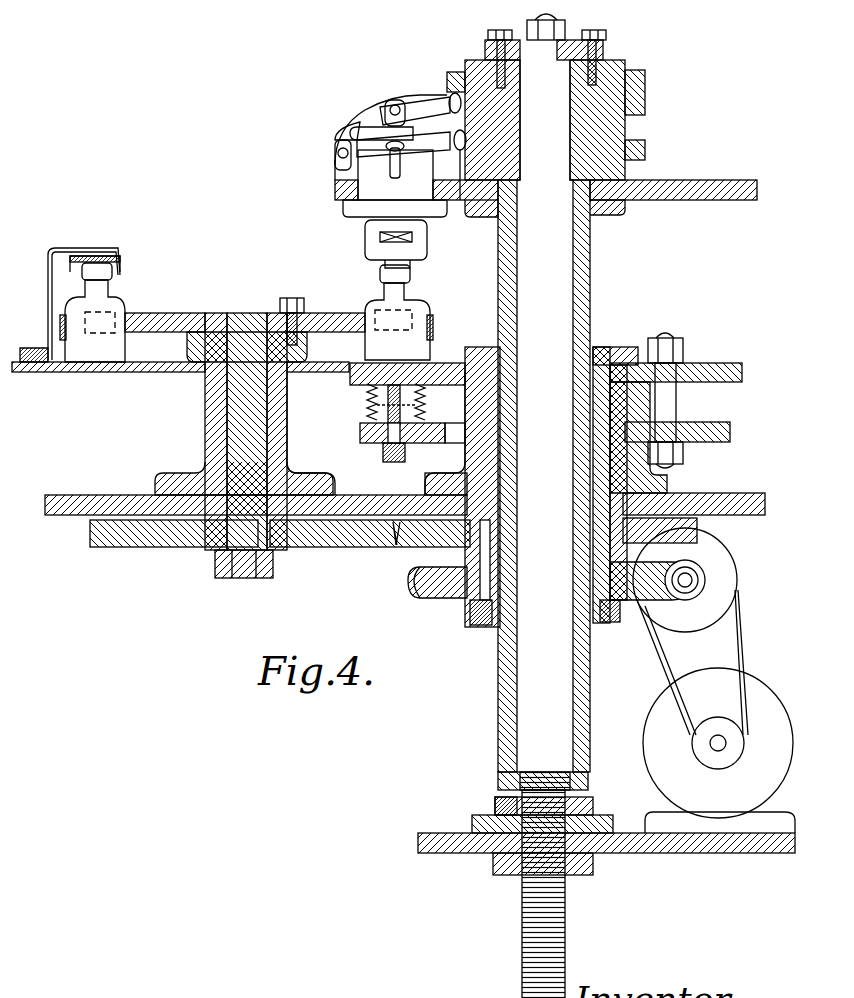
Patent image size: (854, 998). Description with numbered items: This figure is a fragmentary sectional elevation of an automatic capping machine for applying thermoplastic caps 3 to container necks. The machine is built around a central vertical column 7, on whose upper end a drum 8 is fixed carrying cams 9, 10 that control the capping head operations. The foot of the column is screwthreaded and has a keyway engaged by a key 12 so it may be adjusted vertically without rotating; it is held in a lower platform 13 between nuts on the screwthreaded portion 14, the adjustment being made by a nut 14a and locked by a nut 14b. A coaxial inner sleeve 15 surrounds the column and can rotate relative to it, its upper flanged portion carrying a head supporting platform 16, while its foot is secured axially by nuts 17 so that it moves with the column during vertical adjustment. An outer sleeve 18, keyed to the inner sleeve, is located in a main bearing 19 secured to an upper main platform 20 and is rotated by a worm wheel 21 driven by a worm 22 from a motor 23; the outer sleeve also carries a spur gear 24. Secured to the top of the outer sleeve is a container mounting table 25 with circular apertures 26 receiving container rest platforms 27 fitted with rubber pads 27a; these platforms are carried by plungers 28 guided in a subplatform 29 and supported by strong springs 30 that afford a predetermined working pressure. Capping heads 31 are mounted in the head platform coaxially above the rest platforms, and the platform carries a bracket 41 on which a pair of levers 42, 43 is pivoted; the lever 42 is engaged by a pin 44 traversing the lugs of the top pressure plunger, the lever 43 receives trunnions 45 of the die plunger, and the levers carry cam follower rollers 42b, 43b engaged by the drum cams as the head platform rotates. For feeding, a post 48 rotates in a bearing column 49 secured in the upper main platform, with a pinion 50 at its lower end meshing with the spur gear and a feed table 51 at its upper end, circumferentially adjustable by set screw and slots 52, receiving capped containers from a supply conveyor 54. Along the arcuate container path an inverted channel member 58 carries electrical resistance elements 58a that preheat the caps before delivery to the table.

The cap 3 is at (382, 272).
The central vertical column 7 is at (544, 416).
The drum 8 is at (485, 62).
The cam 9 is at (646, 88).
The cam 10 is at (646, 150).
The key 12 is at (595, 812).
The lower platform 13 is at (726, 853).
The screwthreaded portion 14 is at (566, 913).
The nut 14a is at (494, 802).
The nut 14b is at (592, 870).
The inner sleeve 15 is at (590, 237).
The head supporting platform 16 is at (727, 200).
The nuts 17 is at (588, 778).
The outer sleeve 18 is at (602, 350).
The main bearing 19 is at (627, 410).
The upper main platform 20 is at (362, 490).
The worm wheel 21 is at (410, 585).
The worm 22 is at (695, 578).
The motor 23 is at (715, 732).
The spur gear 24 is at (398, 545).
The container mounting table 25 is at (700, 363).
The circular apertures 26 is at (428, 378).
The container rest platforms 27 is at (366, 390).
The rubber pads 27a is at (372, 370).
The plungers 28 is at (386, 430).
The subplatform 29 is at (413, 458).
The springs 30 is at (427, 403).
The capping heads 31 is at (364, 238).
The bracket 41 is at (334, 174).
The lever 42 is at (368, 112).
The cam follower roller 42b is at (450, 94).
The lever 43 is at (367, 147).
The cam follower roller 43b is at (460, 200).
The pin 44 is at (393, 107).
The trunnions 45 is at (397, 160).
The post 48 is at (222, 552).
The bearing column 49 is at (210, 462).
The pinion 50 is at (300, 550).
The feed table 51 is at (333, 312).
The set screw and slots 52 is at (286, 300).
The supply conveyor 54 is at (60, 325).
The inverted channel member 58 is at (124, 266).
The electrical resistance elements 58a is at (110, 254).